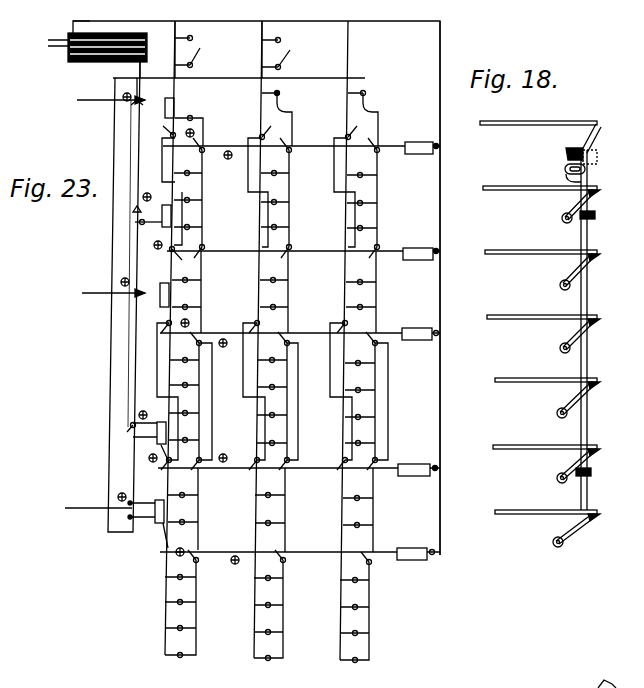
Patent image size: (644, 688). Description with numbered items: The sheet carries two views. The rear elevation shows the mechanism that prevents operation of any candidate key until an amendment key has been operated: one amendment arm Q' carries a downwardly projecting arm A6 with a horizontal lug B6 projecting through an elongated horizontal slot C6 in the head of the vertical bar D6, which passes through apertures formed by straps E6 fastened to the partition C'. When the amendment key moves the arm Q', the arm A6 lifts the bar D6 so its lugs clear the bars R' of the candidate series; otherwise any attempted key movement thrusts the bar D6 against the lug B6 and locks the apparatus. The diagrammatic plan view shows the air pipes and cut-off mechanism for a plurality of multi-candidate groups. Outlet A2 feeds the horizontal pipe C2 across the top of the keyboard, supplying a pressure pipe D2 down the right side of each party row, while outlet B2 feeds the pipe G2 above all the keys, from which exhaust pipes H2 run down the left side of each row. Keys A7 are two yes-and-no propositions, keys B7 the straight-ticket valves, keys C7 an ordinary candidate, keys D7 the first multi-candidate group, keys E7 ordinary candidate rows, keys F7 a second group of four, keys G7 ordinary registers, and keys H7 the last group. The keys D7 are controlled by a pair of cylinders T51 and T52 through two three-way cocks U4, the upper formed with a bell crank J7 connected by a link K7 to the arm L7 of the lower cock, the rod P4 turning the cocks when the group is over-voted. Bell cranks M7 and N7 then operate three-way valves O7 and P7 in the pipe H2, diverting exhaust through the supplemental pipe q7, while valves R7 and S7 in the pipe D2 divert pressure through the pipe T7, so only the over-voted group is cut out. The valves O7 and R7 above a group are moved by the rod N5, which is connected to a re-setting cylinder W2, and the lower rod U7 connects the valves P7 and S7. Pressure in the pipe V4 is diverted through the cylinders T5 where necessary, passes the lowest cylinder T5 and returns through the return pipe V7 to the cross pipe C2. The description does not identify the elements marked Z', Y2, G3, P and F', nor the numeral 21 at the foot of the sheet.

In FIG. 23, the sheet number 21 is at (196, 681).
In FIG. 23, the coil Z' is at (97, 47).
In FIG. 23, the outlet B2 is at (73, 24).
In FIG. 23, the outlet A2 is at (142, 60).
In FIG. 23, the pipe V4 is at (137, 79).
In FIG. 23, the rod P4 is at (109, 193).
In FIG. 23, the three-way cock U4 is at (124, 149).
In FIG. 23, the cylinder T51 is at (165, 103).
In FIG. 23, the bell crank J7 is at (137, 105).
In FIG. 23, the link K7 is at (133, 153).
In FIG. 23, the bell crank M7 is at (161, 132).
In FIG. 23, the supplemental pipe q7 is at (162, 175).
In FIG. 23, the arm L7 is at (135, 222).
In FIG. 23, the cylinder T52 is at (158, 222).
In FIG. 23, the three-way valve P7 is at (239, 248).
In FIG. 23, the cylinder T5 is at (156, 500).
In FIG. 23, the bell crank N7 is at (184, 260).
In FIG. 23, the return pipe V7 is at (108, 437).
In FIG. 23, the keys A7 is at (241, 53).
In FIG. 23, the horizontal pipe C2 is at (207, 49).
In FIG. 23, the horizontal pipe G2 is at (316, 24).
In FIG. 23, the keys B7 is at (262, 93).
In FIG. 23, the keys C7 is at (360, 122).
In FIG. 23, the pipes H2 is at (348, 52).
In FIG. 23, the three-way valve O7 is at (289, 183).
In FIG. 23, the rod N5 is at (325, 452).
In FIG. 23, the pipes D2 is at (292, 135).
In FIG. 23, the conductor Y2 is at (435, 288).
In FIG. 23, the re-setting cylinder W2 is at (420, 142).
In FIG. 23, the conductor G3 is at (440, 150).
In FIG. 23, the three-way valve R7 is at (205, 152).
In FIG. 23, the pipe T7 is at (205, 190).
In FIG. 23, the keys D7 is at (188, 173).
In FIG. 23, the relay P is at (316, 165).
In FIG. 23, the three-way valve S7 is at (207, 247).
In FIG. 23, the lower rod U7 is at (232, 255).
In FIG. 23, the keys E7 is at (360, 307).
In FIG. 23, the keys F7 is at (272, 387).
In FIG. 23, the keys G7 is at (268, 495).
In FIG. 23, the keys H7 is at (268, 605).
In FIG. 18, the bar R' is at (540, 311).
In FIG. 18, the amendment arm Q' is at (580, 335).
In FIG. 18, the downwardly projecting arm A6 is at (568, 161).
In FIG. 18, the horizontal lug B6 is at (564, 170).
In FIG. 18, the elongated horizontal slot C6 is at (590, 167).
In FIG. 18, the straps E6 is at (596, 216).
In FIG. 18, the vertical bar D6 is at (597, 232).
In FIG. 18, the frame F' is at (638, 437).
In FIG. 18, the partition C' is at (607, 669).